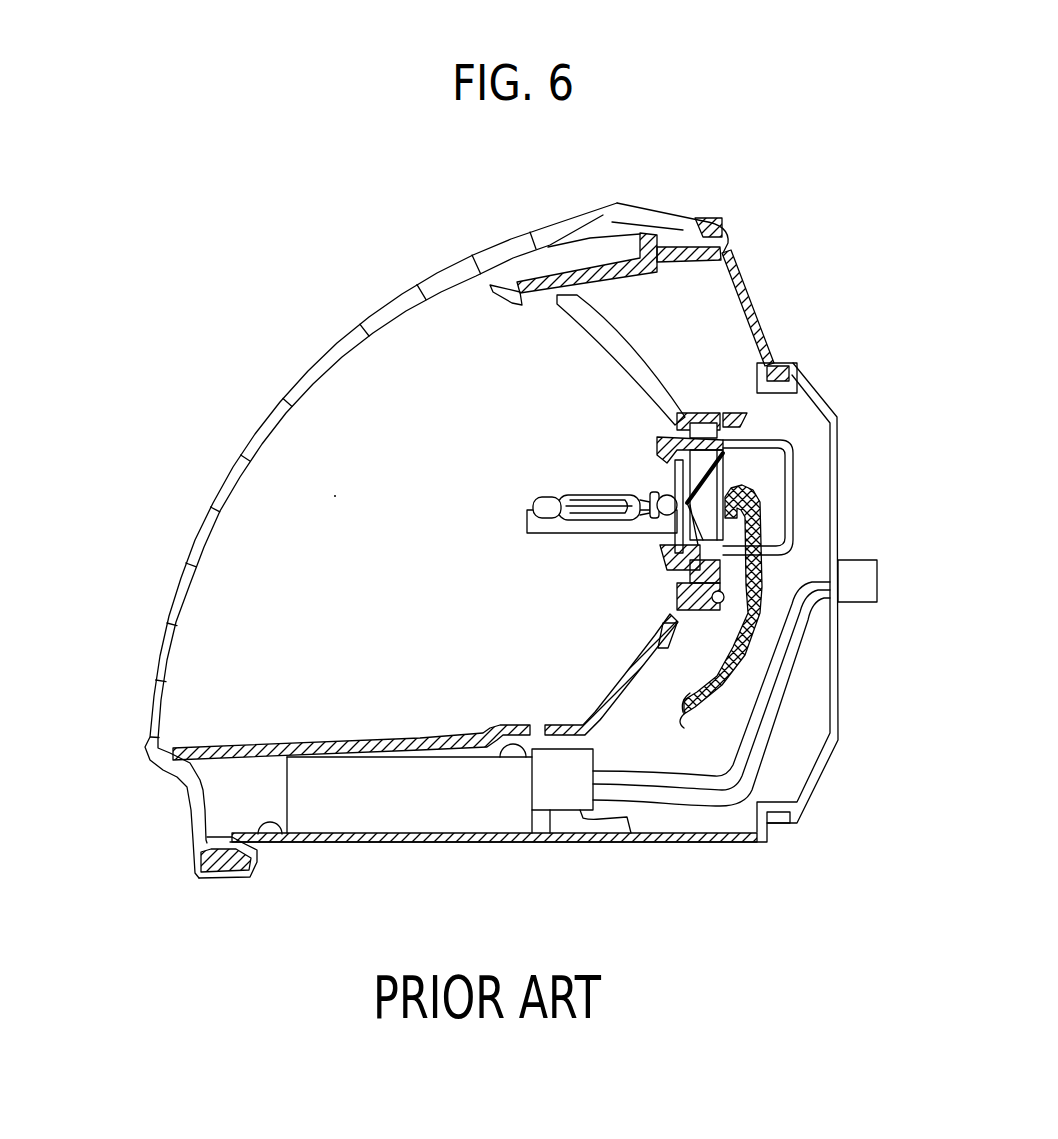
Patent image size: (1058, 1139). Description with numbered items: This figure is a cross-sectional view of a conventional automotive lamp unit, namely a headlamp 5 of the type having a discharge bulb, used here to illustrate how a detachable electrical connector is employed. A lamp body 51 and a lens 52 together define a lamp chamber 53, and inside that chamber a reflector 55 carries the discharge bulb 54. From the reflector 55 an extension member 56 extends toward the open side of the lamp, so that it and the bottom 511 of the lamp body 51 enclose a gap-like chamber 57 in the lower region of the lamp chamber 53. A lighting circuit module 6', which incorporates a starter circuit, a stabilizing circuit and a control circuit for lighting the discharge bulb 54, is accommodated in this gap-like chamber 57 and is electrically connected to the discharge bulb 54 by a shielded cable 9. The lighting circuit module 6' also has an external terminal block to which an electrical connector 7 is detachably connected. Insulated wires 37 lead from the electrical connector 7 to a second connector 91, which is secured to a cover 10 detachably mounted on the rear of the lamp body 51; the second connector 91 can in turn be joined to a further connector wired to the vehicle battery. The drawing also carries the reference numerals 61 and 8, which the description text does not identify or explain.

The headlamp 5 is at (273, 381).
The lamp body 51 is at (770, 338).
The lens 52 is at (180, 588).
The lamp chamber 53 is at (440, 337).
The discharge bulb 54 is at (590, 492).
The reflector 55 is at (640, 353).
The extension member 56 is at (283, 740).
The gap-like chamber 57 is at (227, 805).
The bottom 511 is at (287, 836).
The gap 61 is at (427, 817).
The lighting circuit module 6' is at (503, 835).
The electrical connector 7 is at (627, 833).
The connector 8 is at (557, 813).
The shielded cable 9 is at (763, 587).
The second connector 91 is at (877, 573).
The cover 10 is at (838, 443).
The insulated wires 37 is at (790, 673).